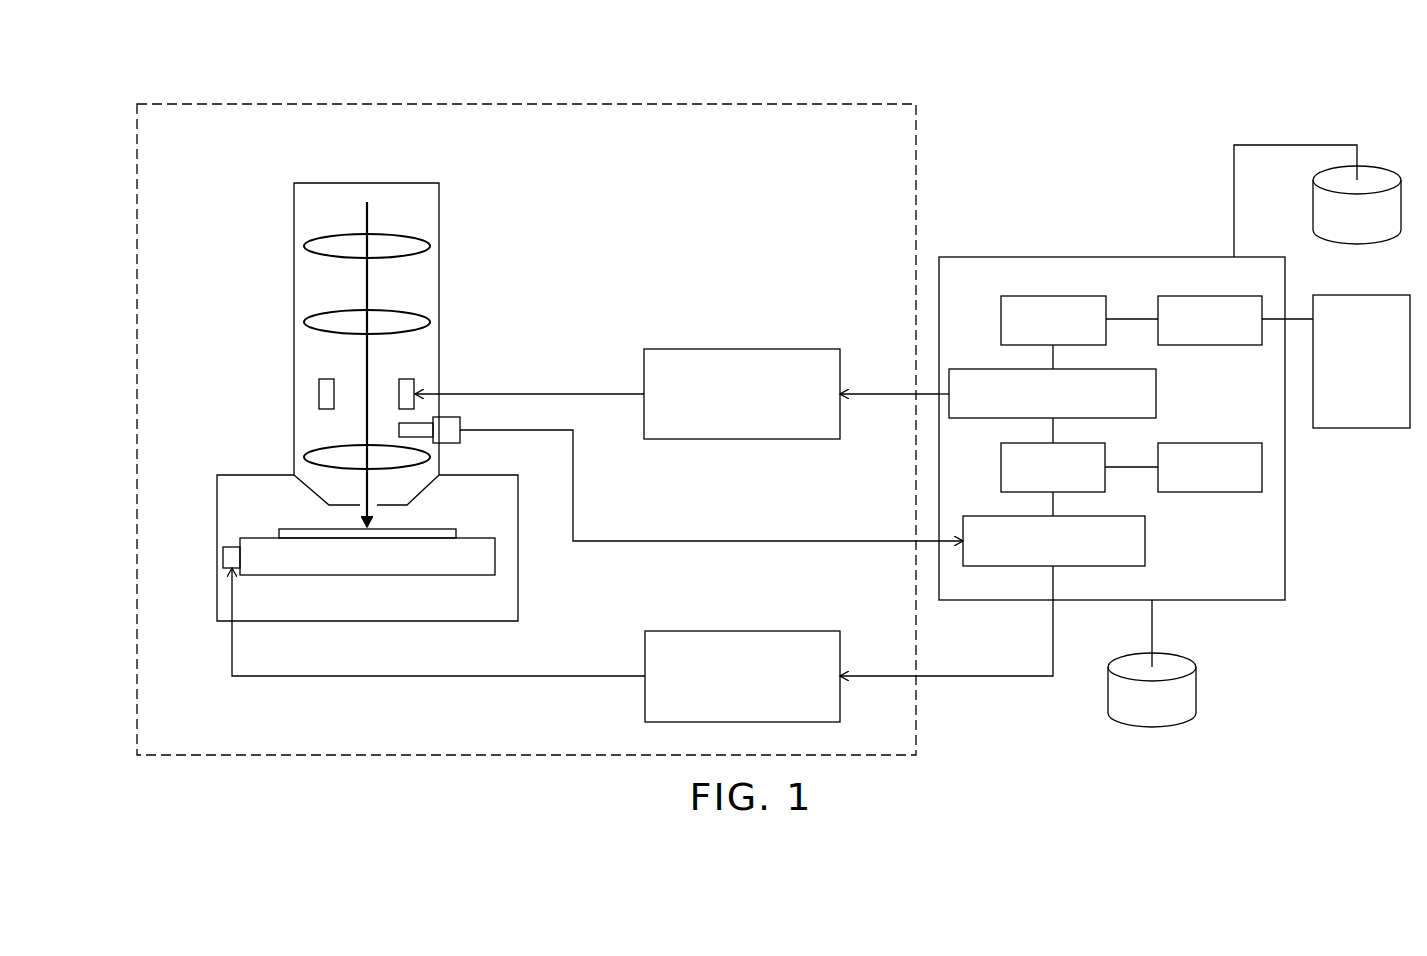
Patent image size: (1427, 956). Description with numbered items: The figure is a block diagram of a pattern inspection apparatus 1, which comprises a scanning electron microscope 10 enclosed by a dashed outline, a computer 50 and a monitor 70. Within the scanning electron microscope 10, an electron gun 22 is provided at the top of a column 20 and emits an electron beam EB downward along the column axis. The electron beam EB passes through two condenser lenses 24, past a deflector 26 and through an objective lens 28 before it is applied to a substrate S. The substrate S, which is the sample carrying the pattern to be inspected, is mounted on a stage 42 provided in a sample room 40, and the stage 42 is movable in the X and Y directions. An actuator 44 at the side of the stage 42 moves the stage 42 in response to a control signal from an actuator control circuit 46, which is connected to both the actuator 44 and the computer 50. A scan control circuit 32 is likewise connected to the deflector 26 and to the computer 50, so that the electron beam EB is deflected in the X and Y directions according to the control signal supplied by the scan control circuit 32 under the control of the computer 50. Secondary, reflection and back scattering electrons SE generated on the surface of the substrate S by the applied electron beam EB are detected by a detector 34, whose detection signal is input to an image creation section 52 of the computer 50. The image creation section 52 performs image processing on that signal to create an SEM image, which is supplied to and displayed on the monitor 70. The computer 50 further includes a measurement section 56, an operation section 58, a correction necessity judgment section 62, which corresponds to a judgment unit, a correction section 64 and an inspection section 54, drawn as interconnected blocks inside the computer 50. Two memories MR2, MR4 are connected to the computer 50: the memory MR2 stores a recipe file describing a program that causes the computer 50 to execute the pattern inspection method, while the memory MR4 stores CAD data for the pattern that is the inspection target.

The pattern inspection apparatus 1 is at (680, 95).
The scanning electron microscope 10 is at (320, 103).
The column 20 is at (439, 200).
The electron gun 22 is at (368, 202).
The condenser lenses 24 is at (428, 244).
The deflector 26 is at (414, 386).
The objective lens 28 is at (428, 455).
The scan control circuit 32 is at (745, 349).
The detector 34 is at (460, 424).
The sample room 40 is at (245, 475).
The stage 42 is at (493, 555).
The actuator 44 is at (225, 558).
The actuator control circuit 46 is at (745, 631).
The computer 50 is at (1122, 257).
The image creation section 52 is at (1145, 540).
The inspection section 54 is at (1205, 296).
The measurement section 56 is at (1210, 492).
The operation section 58 is at (1001, 468).
The correction necessity judgment section 62 is at (1156, 392).
The correction section 64 is at (1053, 296).
The monitor 70 is at (1362, 428).
The electron beam EB is at (367, 290).
The substrate S is at (430, 532).
The secondary electron SE is at (392, 430).
The memory MR2 is at (1357, 244).
The memory MR4 is at (1196, 685).